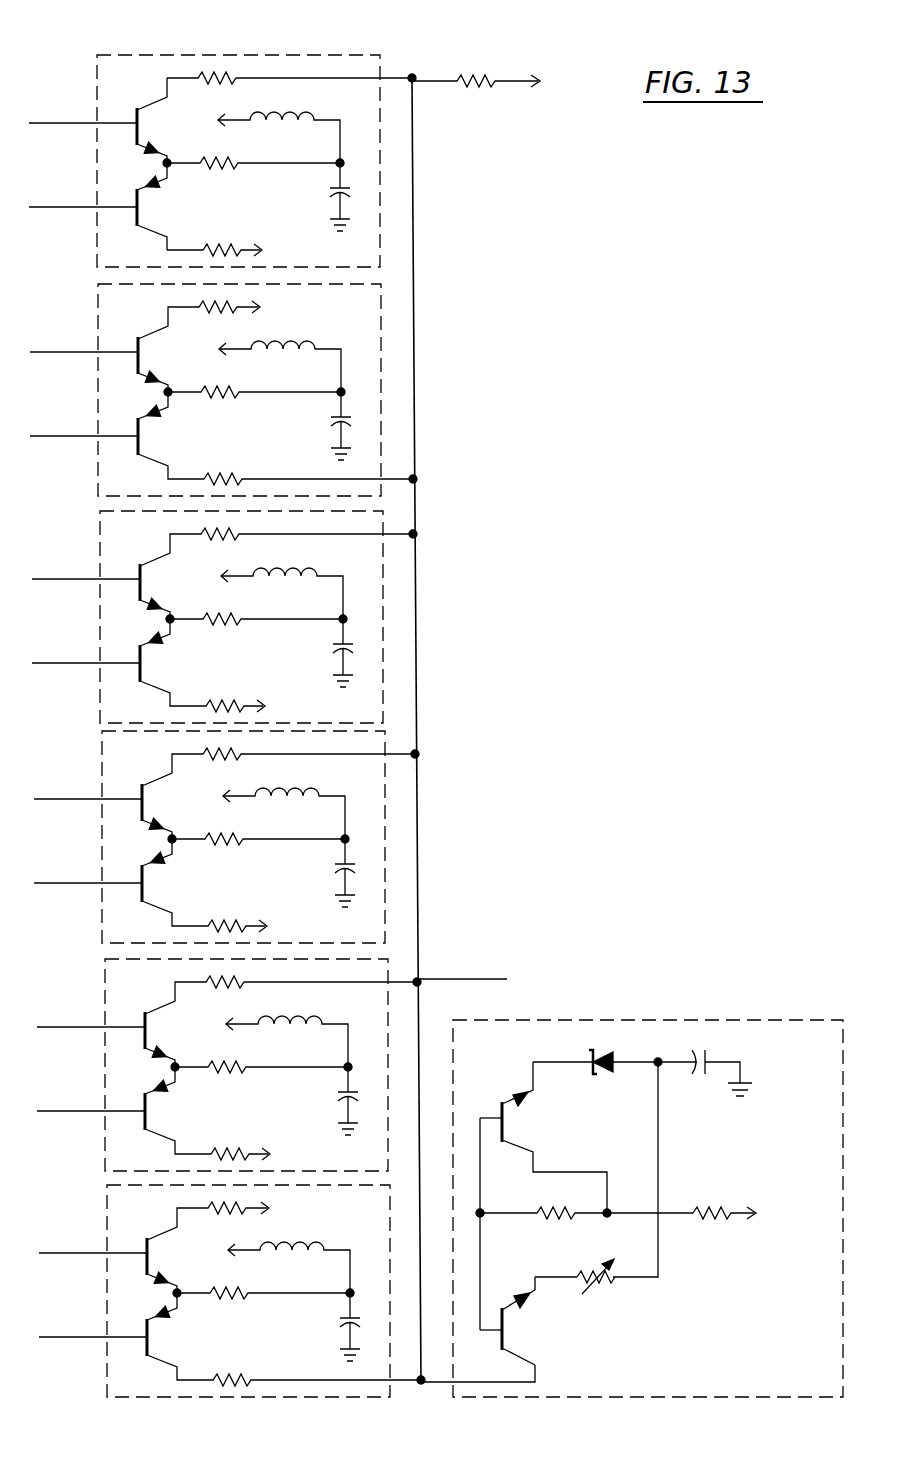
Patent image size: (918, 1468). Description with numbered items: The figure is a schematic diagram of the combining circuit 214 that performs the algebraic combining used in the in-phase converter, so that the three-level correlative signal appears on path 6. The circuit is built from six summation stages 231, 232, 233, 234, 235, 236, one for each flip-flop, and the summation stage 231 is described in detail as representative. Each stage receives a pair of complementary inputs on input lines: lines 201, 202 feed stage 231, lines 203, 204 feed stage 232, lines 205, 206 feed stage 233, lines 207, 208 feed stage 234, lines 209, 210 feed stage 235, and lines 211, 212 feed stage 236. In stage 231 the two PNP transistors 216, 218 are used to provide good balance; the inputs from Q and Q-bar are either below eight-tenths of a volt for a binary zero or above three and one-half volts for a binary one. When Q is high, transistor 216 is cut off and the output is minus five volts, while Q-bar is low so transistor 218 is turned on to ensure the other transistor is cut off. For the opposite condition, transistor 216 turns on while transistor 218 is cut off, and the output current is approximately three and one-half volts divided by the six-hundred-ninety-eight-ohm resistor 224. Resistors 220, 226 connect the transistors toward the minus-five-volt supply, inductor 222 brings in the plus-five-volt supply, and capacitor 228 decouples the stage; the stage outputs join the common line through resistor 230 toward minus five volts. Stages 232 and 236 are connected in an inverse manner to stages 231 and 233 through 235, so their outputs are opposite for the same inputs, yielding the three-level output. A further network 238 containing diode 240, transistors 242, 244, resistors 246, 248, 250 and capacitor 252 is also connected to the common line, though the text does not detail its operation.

The path 6 is at (462, 978).
The input line 201 is at (83, 111).
The input line 202 is at (83, 195).
The input line 203 is at (84, 340).
The input line 204 is at (84, 424).
The input line 205 is at (86, 567).
The input line 206 is at (86, 651).
The input line 207 is at (88, 787).
The input line 208 is at (88, 871).
The input line 209 is at (91, 1015).
The input line 210 is at (91, 1099).
The input line 211 is at (93, 1241).
The input line 212 is at (93, 1325).
The combining circuit 214 is at (508, 238).
The PNP transistor 216 is at (137, 120).
The PNP transistor 218 is at (138, 206).
The resistor 220 is at (288, 81).
The inductor 222 is at (262, 124).
The resistor 224 is at (253, 164).
The resistor 226 is at (229, 238).
The capacitor 228 is at (315, 197).
The resistor 230 is at (480, 78).
The summation stage 231 is at (222, 161).
The summation stage 232 is at (223, 390).
The summation stage 233 is at (224, 617).
The summation stage 234 is at (226, 837).
The summation stage 235 is at (229, 1065).
The summation stage 236 is at (232, 1291).
The bias circuit 238 is at (500, 1044).
The diode 240 is at (607, 1058).
The transistor 242 is at (494, 1133).
The transistor 244 is at (490, 1340).
The resistor 246 is at (548, 1212).
The variable resistor 248 is at (585, 1270).
The resistor 250 is at (718, 1211).
The capacitor 252 is at (707, 1058).